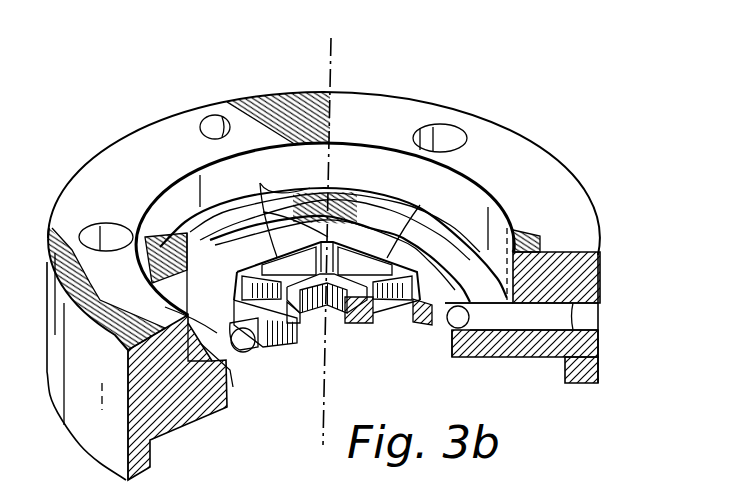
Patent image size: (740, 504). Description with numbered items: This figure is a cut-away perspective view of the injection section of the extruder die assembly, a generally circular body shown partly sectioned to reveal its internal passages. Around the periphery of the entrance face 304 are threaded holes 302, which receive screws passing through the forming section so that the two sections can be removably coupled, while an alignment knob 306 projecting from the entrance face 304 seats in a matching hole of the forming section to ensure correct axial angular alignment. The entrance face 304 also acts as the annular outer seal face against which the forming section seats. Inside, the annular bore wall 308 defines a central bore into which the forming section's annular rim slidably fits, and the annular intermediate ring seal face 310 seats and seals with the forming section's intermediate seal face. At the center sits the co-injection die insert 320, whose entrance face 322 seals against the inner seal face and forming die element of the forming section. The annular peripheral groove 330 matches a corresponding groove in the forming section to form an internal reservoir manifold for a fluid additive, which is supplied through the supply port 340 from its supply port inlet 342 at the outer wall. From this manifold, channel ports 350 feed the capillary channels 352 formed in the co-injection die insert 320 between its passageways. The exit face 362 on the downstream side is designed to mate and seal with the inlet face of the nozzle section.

The threaded holes 302 is at (452, 133).
The entrance face 304 is at (370, 97).
The alignment knob 306 is at (212, 120).
The annular bore wall 308 is at (497, 210).
The annular intermediate ring seal face 310 is at (397, 200).
The co-injection die insert 320 is at (363, 323).
The entrance face 322 is at (427, 197).
The annular peripheral groove 330 is at (462, 340).
The supply port 340 is at (563, 312).
The supply port inlet 342 is at (597, 333).
The channel ports 350 is at (247, 350).
The capillary channels 352 is at (260, 187).
The exit face 362 is at (537, 358).